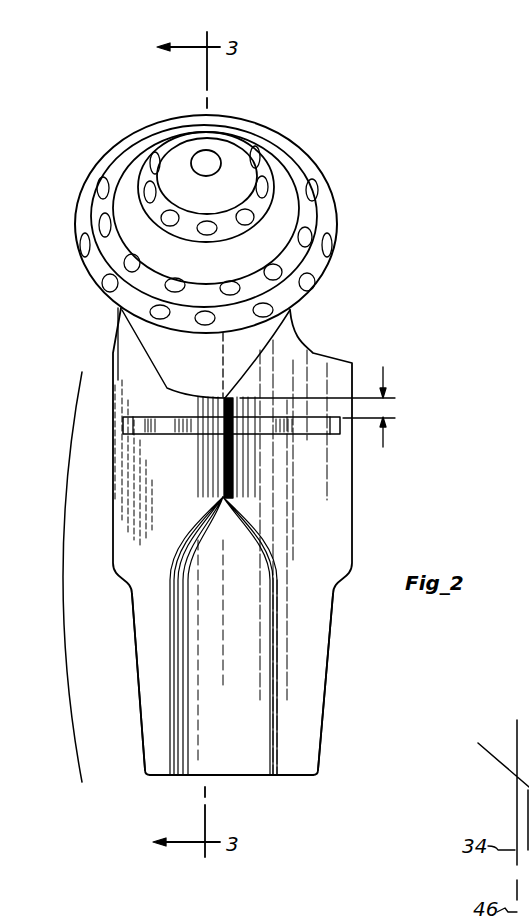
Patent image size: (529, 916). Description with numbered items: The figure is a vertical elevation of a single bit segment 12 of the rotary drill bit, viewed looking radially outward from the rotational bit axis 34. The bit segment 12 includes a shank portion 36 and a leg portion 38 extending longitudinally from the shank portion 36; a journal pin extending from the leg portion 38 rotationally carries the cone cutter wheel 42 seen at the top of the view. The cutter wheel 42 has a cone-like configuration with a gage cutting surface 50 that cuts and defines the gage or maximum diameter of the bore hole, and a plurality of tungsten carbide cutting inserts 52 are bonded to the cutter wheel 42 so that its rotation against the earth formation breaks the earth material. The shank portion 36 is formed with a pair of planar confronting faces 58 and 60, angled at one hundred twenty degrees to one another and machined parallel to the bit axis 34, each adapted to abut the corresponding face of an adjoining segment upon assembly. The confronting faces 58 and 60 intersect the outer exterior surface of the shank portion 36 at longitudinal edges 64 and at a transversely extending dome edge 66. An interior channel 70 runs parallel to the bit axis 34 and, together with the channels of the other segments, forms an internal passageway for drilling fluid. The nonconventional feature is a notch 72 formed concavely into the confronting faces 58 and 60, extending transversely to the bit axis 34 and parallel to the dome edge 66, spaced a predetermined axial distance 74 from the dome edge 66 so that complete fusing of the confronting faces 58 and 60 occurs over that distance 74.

The bit segment 12 is at (380, 320).
The bit axis 34 is at (226, 612).
The shank portion 36 is at (63, 577).
The leg portion 38 is at (147, 340).
The cone cutter wheel 42 is at (270, 152).
The gage cutting surface 50 is at (317, 292).
The cutting inserts 52 is at (108, 282).
The confronting face 58 is at (297, 375).
The confronting face 60 is at (150, 400).
The longitudinal edges 64 is at (138, 667).
The dome edge 66 is at (227, 397).
The interior channel 70 is at (230, 760).
The notch 72 is at (318, 430).
The axial distance 74 is at (318, 394).